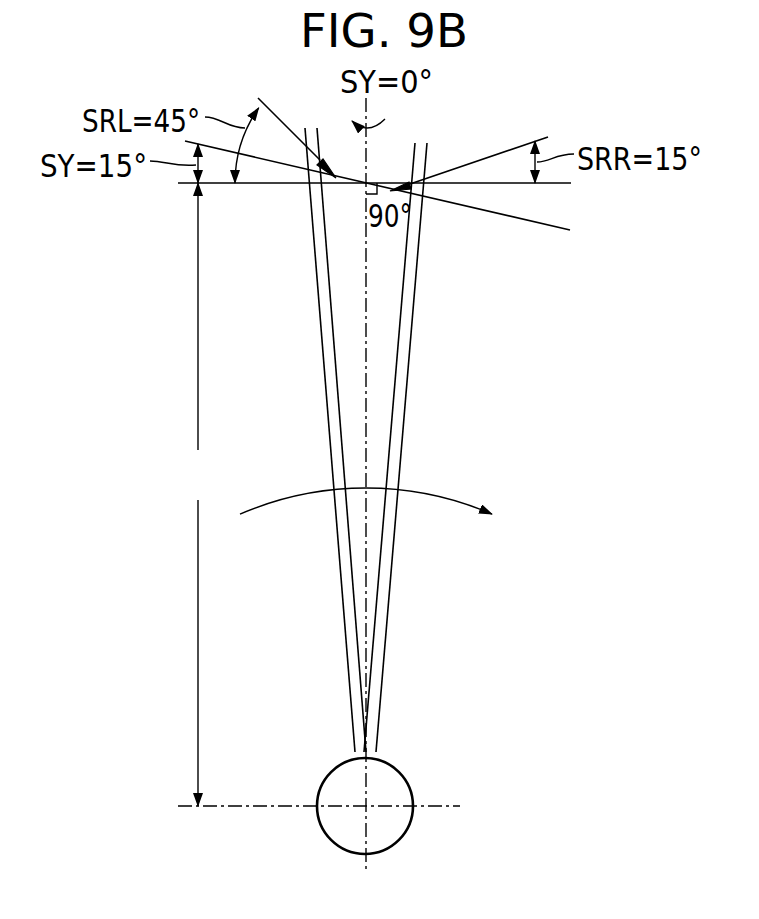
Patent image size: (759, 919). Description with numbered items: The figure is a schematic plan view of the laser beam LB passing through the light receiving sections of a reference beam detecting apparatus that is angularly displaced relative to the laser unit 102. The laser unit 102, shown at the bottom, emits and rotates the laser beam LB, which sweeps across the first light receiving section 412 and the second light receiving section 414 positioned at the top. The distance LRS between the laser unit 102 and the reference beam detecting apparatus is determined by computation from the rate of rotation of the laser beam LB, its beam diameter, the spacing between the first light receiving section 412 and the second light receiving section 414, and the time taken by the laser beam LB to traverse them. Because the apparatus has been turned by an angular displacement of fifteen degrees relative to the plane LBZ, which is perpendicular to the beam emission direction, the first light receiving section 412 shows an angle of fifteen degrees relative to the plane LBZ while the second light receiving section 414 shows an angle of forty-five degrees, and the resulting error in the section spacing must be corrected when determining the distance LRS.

The laser unit 102 is at (330, 843).
The first light receiving section 412 is at (408, 180).
The second light receiving section 414 is at (331, 160).
The laser beam LB is at (390, 597).
The plane perpendicular to the beam emission direction LBZ is at (545, 183).
The distance between laser unit and reference beam detecting apparatus LRS is at (190, 494).